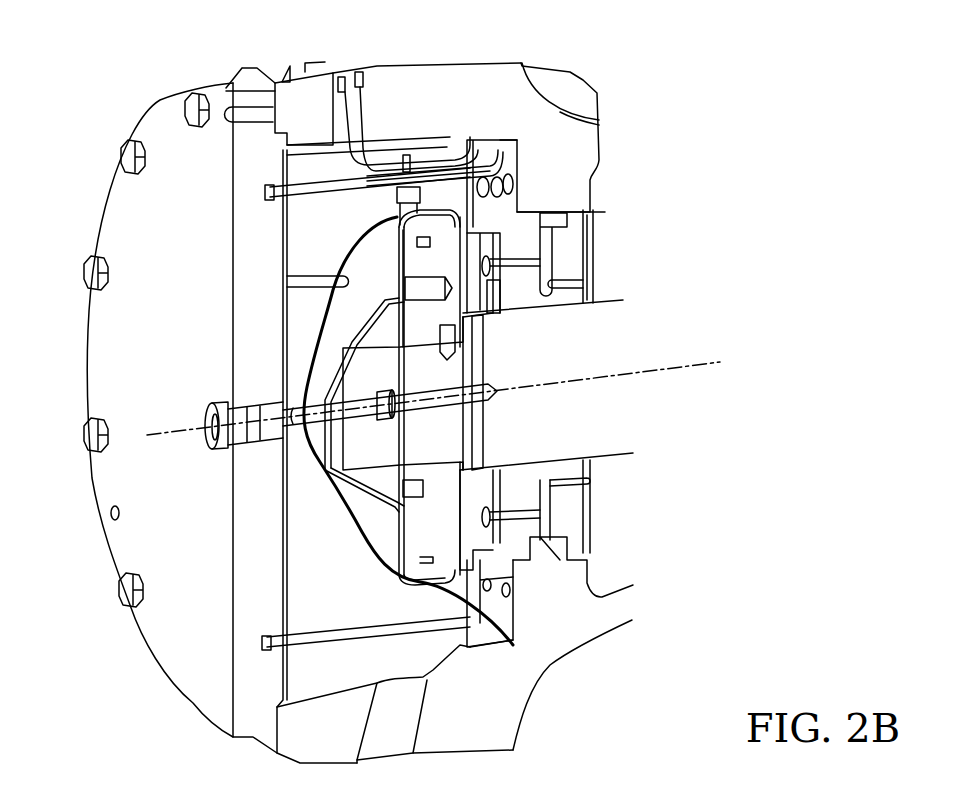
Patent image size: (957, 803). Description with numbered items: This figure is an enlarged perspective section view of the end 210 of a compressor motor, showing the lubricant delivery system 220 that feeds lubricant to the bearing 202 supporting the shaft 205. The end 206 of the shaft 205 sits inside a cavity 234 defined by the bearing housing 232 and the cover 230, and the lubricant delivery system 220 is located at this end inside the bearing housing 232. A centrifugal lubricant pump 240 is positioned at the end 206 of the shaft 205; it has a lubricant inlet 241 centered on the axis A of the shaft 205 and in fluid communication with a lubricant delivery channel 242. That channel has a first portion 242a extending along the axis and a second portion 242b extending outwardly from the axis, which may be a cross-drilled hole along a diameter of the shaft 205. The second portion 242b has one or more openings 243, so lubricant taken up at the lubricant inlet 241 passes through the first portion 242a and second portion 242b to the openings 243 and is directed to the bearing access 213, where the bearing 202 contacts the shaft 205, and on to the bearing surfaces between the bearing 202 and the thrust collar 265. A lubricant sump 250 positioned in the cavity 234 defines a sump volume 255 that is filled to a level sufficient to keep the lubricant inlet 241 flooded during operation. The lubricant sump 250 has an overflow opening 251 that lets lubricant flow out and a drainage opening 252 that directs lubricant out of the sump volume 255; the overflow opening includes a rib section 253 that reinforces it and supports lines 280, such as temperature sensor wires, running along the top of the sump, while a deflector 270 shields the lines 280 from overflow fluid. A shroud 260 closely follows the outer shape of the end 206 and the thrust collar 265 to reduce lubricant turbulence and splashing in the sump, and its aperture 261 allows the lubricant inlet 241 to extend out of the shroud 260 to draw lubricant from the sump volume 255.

The bearing 202 is at (470, 250).
The shaft 205 is at (607, 410).
The end of the shaft 206 is at (428, 447).
The end of the motor 210 is at (667, 330).
The bearing access 213 is at (500, 313).
The lubricant delivery system 220 is at (580, 653).
The cover 230 is at (253, 700).
The bearing housing 232 is at (567, 147).
The cavity 234 is at (343, 670).
The centrifugal lubricant pump 240 is at (310, 397).
The lubricant inlet 241 is at (293, 423).
The lubricant delivery channel 242 is at (423, 400).
The first portion 242a is at (440, 403).
The second portion 242b is at (477, 363).
The openings 243 is at (480, 323).
The lubricant sump 250 is at (300, 645).
The overflow opening 251 is at (340, 203).
The drainage opening 252 is at (377, 637).
The rib section 253 is at (273, 198).
The sump volume 255 is at (310, 307).
The shroud 260 is at (387, 533).
The aperture 261 is at (312, 430).
The thrust collar 265 is at (423, 260).
The deflector 270 is at (327, 157).
The lines 280 is at (380, 157).